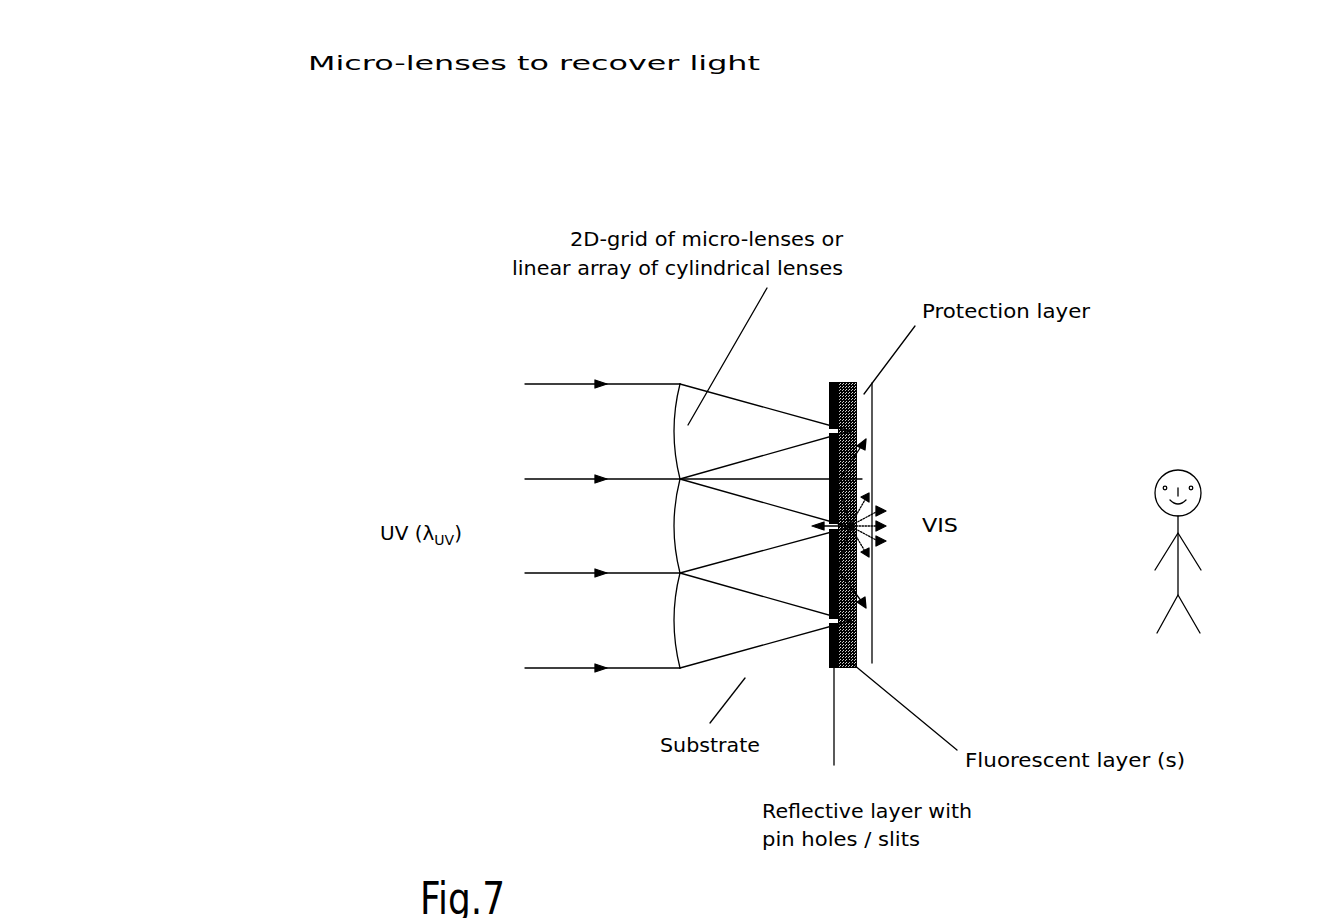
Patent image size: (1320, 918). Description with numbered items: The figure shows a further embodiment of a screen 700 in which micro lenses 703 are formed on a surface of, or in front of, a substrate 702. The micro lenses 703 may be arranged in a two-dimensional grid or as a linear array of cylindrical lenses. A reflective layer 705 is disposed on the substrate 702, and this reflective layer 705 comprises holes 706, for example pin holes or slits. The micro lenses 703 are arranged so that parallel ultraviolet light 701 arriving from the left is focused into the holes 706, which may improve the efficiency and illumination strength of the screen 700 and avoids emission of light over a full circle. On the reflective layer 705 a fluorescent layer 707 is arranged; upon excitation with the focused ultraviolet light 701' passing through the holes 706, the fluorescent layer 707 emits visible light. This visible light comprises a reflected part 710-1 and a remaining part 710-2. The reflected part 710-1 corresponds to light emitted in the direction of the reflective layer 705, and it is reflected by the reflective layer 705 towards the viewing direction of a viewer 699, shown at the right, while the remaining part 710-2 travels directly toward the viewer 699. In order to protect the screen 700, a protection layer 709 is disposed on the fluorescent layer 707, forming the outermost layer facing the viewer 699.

The viewer 699 is at (1206, 463).
The screen 700 is at (882, 282).
The parallel ultraviolet light 701 is at (602, 554).
The focused ultraviolet light 701' is at (771, 528).
The substrate 702 is at (786, 340).
The micro lenses 703 is at (673, 432).
The reflective layer 705 is at (834, 381).
The holes 706 is at (812, 432).
The fluorescent layer 707 is at (850, 669).
The protection layer 709 is at (863, 648).
The reflected part 710-1 is at (858, 459).
The remaining part 710-2 is at (880, 511).